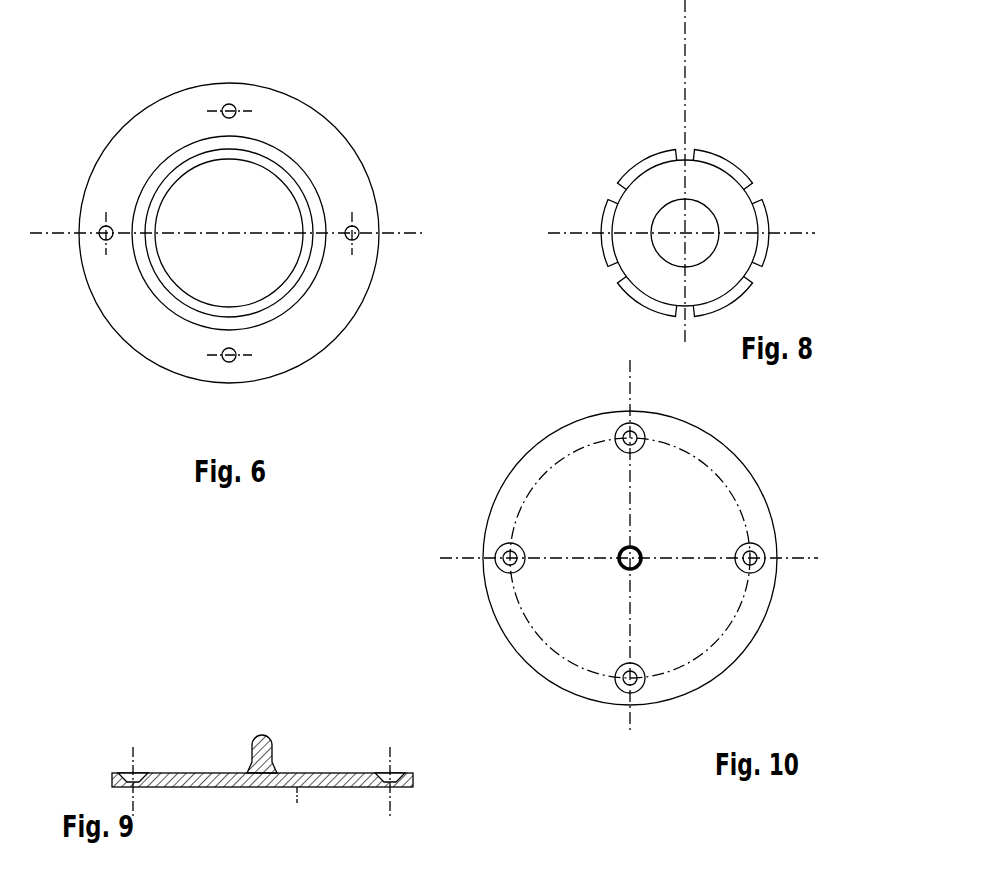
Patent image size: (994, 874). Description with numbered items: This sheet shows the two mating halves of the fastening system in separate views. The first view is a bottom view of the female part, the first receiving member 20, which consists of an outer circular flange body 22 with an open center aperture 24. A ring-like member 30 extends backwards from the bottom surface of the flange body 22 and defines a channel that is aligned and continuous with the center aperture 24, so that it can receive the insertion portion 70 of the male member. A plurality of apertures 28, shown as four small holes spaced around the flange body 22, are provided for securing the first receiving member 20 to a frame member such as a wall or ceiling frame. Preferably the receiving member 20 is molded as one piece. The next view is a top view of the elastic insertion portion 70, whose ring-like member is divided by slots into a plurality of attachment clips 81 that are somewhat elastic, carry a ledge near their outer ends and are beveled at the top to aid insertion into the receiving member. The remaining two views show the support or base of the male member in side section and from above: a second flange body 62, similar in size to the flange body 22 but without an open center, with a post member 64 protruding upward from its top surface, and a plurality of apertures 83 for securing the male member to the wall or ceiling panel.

In FIG. 6, the first receiving member 20 is at (170, 87).
In FIG. 6, the outer circular flange body 22 is at (317, 323).
In FIG. 6, the center aperture 24 is at (229, 233).
In FIG. 6, the apertures 28 is at (232, 105).
In FIG. 6, the ring-like member 30 is at (302, 167).
In FIG. 10, the second flange body 62 is at (747, 465).
In FIG. 9, the second flange body 62 is at (296, 788).
In FIG. 9, the post member 64 is at (268, 740).
In FIG. 8, the insertion portion 70 is at (678, 143).
In FIG. 8, the attachment clips 81 is at (645, 160).
In FIG. 10, the apertures 83 is at (638, 427).